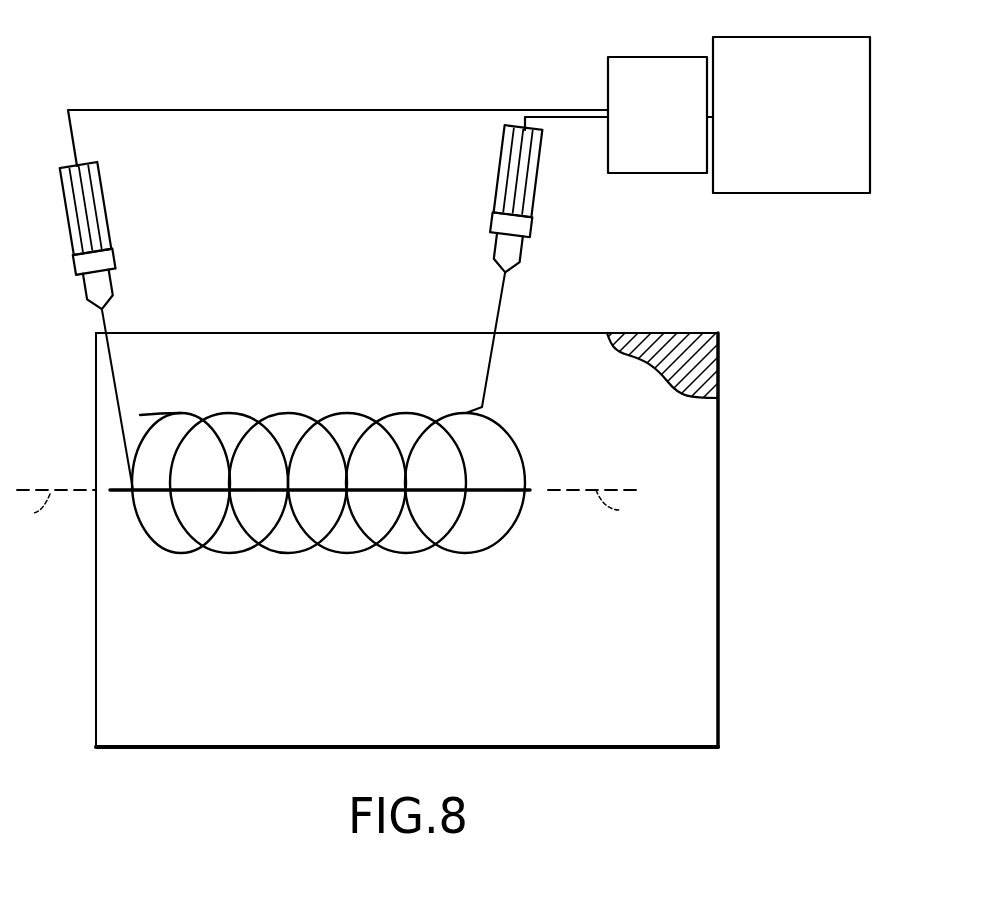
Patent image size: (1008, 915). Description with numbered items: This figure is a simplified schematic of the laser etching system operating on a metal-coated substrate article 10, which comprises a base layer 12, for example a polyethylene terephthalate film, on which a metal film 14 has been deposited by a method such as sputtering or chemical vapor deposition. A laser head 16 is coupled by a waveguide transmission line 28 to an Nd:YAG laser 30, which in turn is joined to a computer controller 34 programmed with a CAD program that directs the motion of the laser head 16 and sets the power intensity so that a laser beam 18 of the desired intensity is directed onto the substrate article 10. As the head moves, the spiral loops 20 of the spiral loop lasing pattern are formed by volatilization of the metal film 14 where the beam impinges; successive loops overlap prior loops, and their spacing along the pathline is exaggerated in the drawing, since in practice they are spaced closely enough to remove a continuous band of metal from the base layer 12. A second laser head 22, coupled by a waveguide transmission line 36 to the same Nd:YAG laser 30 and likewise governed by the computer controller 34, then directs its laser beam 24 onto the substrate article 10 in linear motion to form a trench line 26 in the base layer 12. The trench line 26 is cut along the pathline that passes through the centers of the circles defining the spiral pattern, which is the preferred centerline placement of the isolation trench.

The substrate article 10 is at (235, 766).
The base layer 12 is at (718, 337).
The metal film 14 is at (718, 381).
The laser head 16 is at (521, 249).
The laser beam 18 is at (497, 314).
The spiral loops 20 is at (480, 404).
The second laser head 22 is at (113, 284).
The laser beam 24 is at (114, 386).
The trench line 26 is at (120, 493).
The waveguide transmission line 28 is at (563, 118).
The Nd:YAG laser 30 is at (645, 174).
The computer controller 34 is at (733, 194).
The waveguide transmission line 36 is at (226, 112).